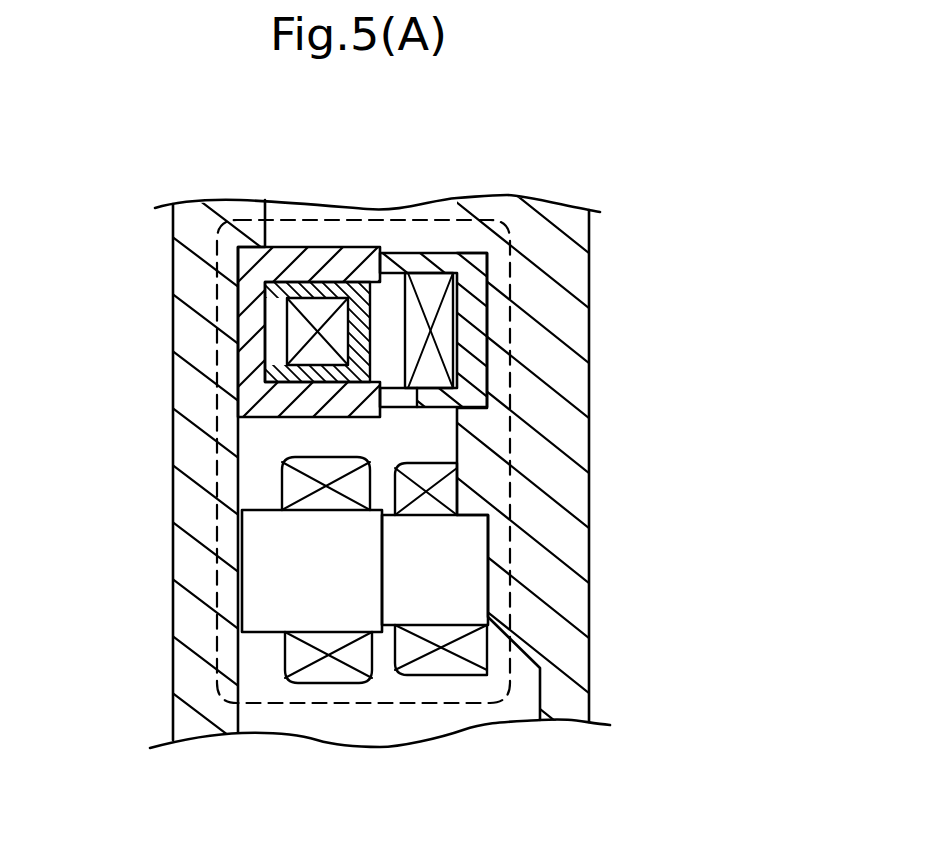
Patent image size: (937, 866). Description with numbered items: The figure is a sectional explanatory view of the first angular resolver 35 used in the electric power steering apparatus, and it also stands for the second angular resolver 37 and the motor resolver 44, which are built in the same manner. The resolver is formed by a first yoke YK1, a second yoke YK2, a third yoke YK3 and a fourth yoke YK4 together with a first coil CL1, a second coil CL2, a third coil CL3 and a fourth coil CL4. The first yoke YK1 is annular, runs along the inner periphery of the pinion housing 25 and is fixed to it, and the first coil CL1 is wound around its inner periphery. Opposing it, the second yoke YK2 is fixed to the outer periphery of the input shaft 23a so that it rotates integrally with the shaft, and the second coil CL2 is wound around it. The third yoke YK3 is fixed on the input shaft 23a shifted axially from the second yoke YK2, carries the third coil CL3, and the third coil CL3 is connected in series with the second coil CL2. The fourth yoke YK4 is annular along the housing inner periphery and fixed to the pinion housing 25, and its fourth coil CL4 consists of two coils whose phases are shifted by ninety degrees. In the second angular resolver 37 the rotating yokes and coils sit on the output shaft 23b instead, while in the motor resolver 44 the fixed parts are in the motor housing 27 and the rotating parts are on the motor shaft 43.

The first yoke YK1 is at (288, 250).
The second yoke YK2 is at (463, 260).
The third yoke YK3 is at (458, 610).
The fourth yoke YK4 is at (270, 612).
The first coil CL1 is at (320, 300).
The second coil CL2 is at (423, 283).
The third coil CL3 is at (435, 663).
The fourth coil CL4 is at (330, 668).
The first angular resolver 35 is at (513, 283).
The second angular resolver 37 is at (729, 221).
The motor resolver 44 is at (729, 221).
The input shaft 23a is at (570, 388).
The output shaft 23b is at (735, 422).
The motor shaft 43 is at (735, 422).
The pinion housing 25 is at (175, 472).
The motor housing 27 is at (74, 511).